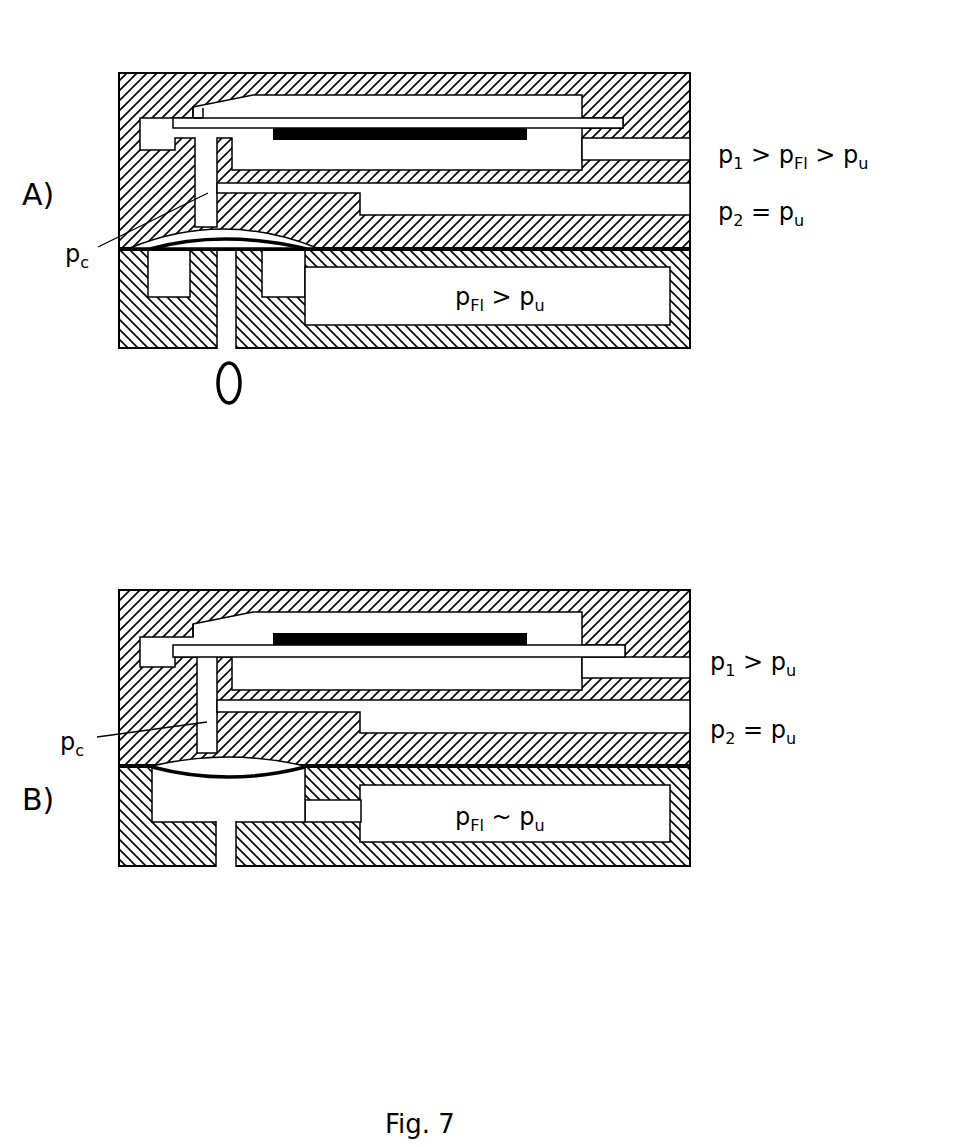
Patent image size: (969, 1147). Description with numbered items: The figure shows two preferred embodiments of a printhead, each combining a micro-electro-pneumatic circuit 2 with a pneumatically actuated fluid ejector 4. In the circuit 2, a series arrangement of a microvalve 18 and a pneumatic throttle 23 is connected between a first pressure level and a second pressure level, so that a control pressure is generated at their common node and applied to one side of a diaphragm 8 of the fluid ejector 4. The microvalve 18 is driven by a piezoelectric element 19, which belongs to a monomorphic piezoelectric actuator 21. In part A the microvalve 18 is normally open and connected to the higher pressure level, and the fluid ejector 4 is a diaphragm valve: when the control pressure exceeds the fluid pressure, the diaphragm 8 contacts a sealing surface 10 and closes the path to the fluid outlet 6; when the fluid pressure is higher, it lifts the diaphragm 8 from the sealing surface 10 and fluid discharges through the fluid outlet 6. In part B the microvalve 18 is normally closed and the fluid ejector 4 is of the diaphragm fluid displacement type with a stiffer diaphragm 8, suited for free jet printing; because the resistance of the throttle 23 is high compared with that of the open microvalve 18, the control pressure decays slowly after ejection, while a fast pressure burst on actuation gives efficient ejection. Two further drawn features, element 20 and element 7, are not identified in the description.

The micro-electro-pneumatic circuit 2 is at (108, 172).
The fluid ejector 4 is at (108, 337).
The fluid outlet 6 is at (228, 335).
The fluid chamber 7 is at (317, 292).
The diaphragm 8 is at (205, 245).
The sealing surface 10 is at (208, 258).
The microvalve 18 is at (203, 110).
The piezoelectric element 19 is at (505, 128).
The pressure channel 20 is at (193, 137).
The monomorphic piezoelectric actuator 21 is at (552, 117).
The pneumatic throttle 23 is at (317, 185).